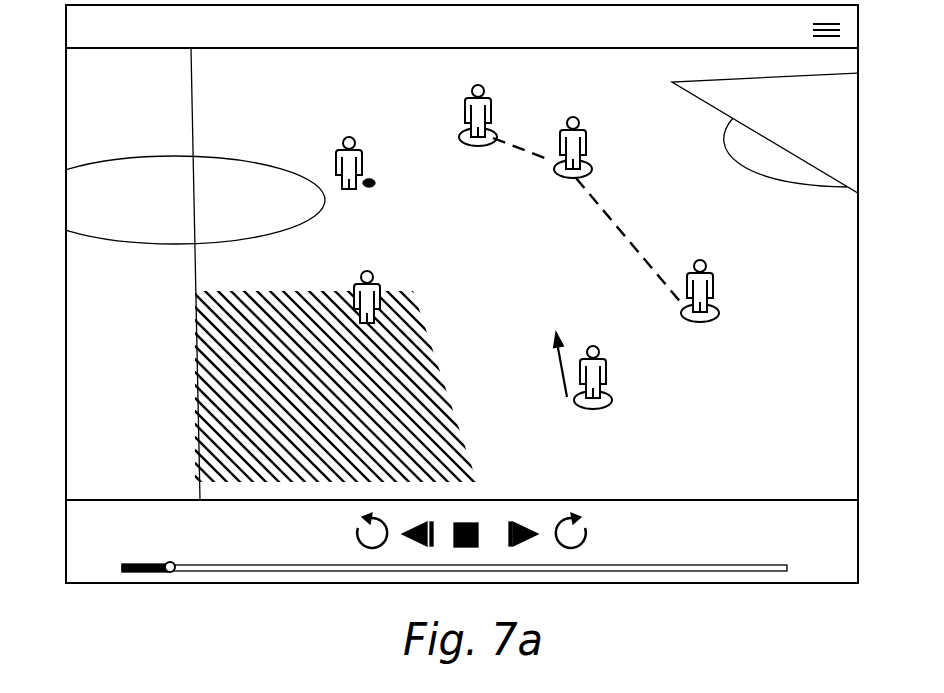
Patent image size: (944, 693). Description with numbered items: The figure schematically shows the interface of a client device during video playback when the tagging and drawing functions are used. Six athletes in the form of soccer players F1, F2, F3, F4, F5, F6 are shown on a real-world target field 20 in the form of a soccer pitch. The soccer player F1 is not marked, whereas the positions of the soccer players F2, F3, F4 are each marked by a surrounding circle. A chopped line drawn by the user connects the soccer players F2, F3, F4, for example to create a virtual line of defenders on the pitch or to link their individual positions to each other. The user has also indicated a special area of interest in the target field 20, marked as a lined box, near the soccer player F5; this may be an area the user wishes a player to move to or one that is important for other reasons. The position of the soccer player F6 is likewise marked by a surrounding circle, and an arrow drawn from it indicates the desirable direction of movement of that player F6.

The real-world target field 20 is at (127, 424).
The soccer player F1 is at (368, 156).
The soccer player F2 is at (493, 111).
The soccer player F3 is at (591, 147).
The soccer player F4 is at (718, 291).
The soccer player F5 is at (385, 288).
The soccer player F6 is at (607, 377).